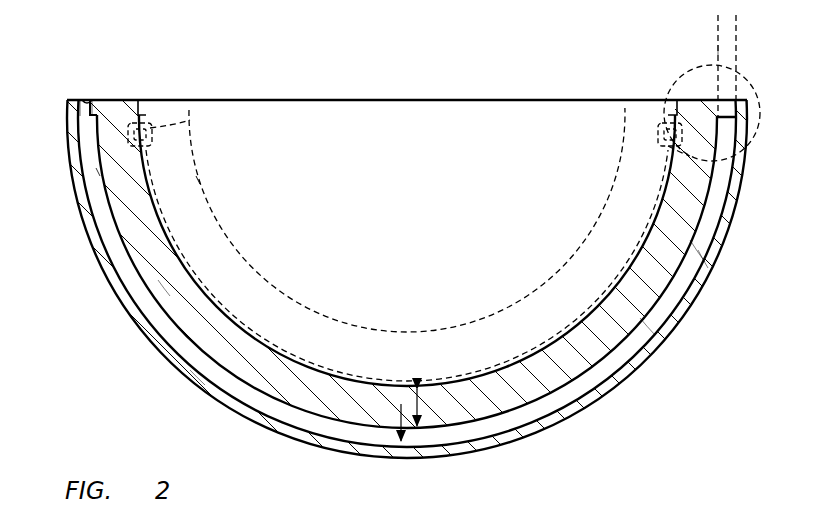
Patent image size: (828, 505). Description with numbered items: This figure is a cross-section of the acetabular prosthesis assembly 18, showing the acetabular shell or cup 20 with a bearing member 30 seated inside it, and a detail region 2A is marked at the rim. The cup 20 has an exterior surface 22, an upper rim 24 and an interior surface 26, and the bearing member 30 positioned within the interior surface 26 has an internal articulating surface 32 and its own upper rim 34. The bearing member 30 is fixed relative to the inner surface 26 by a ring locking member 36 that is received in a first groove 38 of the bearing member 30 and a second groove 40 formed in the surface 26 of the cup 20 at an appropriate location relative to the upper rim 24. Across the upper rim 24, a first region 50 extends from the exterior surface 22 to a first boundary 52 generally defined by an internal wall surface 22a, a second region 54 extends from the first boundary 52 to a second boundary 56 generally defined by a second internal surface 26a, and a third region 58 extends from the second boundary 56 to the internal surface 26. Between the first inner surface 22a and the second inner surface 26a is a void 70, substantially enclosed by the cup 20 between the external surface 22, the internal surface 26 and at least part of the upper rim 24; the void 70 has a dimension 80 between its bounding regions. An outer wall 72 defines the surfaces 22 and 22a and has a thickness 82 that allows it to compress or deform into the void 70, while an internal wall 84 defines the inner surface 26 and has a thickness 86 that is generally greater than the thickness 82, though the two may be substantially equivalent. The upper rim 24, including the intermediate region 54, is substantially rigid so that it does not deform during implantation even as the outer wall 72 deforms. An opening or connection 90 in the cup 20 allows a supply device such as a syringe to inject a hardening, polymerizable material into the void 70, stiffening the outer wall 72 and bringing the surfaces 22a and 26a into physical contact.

The acetabular prosthesis assembly 18 is at (243, 69).
The acetabular shell or cup 20 is at (96, 95).
The exterior surface 22 is at (698, 296).
The internal wall surface 22a is at (702, 258).
The upper rim 24 is at (772, 500).
The interior surface 26 is at (657, 213).
The second internal surface 26a is at (697, 248).
The bearing member 30 is at (165, 97).
The internal articulating surface 32 is at (198, 180).
The upper rim 34 is at (153, 98).
The ring locking member 36 is at (98, 173).
The first groove 38 is at (196, 115).
The second groove 40 is at (124, 123).
The first region of the upper rim 50 is at (748, 96).
The first boundary or region 52 is at (738, 33).
The second region 54 is at (722, 97).
The second boundary 56 is at (718, 50).
The third region 58 is at (674, 98).
The void or opening 70 is at (650, 327).
The outer wall 72 is at (197, 377).
The dimension of the void 80 is at (690, 22).
The thickness of the outer wall 82 is at (401, 461).
The internal wall 84 is at (163, 288).
The thickness of the internal wall 86 is at (417, 387).
The opening or connection 90 is at (85, 98).
The detail view 2A is at (746, 147).